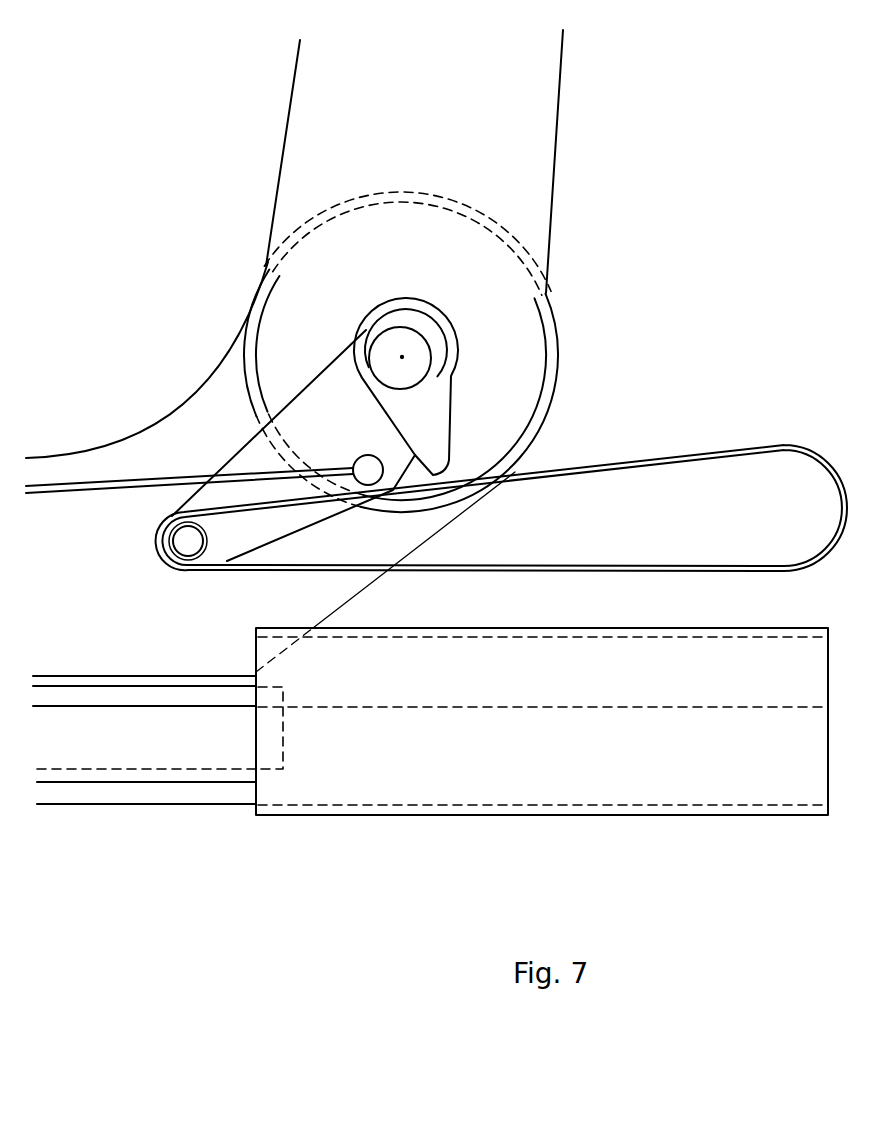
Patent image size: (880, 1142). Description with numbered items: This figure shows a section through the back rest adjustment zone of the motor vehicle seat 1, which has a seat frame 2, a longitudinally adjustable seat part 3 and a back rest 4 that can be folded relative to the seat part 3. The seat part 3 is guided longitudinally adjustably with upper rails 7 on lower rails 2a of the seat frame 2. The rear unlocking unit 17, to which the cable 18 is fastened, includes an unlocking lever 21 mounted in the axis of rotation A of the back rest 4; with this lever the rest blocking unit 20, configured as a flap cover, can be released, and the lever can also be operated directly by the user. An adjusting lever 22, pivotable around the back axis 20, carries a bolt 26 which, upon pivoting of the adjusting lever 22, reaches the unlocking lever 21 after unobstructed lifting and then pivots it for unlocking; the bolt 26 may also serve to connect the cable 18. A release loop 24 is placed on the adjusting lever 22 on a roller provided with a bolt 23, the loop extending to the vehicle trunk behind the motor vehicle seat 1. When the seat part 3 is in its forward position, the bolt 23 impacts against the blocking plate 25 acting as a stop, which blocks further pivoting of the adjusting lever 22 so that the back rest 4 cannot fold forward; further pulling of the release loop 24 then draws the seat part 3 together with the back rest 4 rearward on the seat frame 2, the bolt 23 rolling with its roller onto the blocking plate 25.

The motor vehicle seat 1 is at (90, 72).
The seat frame 2 is at (248, 823).
The lower rails 2a is at (87, 797).
The seat part 3 is at (95, 452).
The back rest 4 is at (540, 112).
The upper rails 7 is at (57, 672).
The rear unlocking unit 17 is at (194, 363).
The cable 18 is at (50, 497).
The rest blocking unit 20 is at (405, 333).
The unlocking lever 21 is at (440, 410).
The adjusting lever 22 is at (253, 452).
The bolt 23 is at (180, 572).
The release loop 24 is at (650, 457).
The blocking plate 25 is at (328, 808).
The bolt 26 is at (367, 466).
The axis of rotation A is at (403, 357).